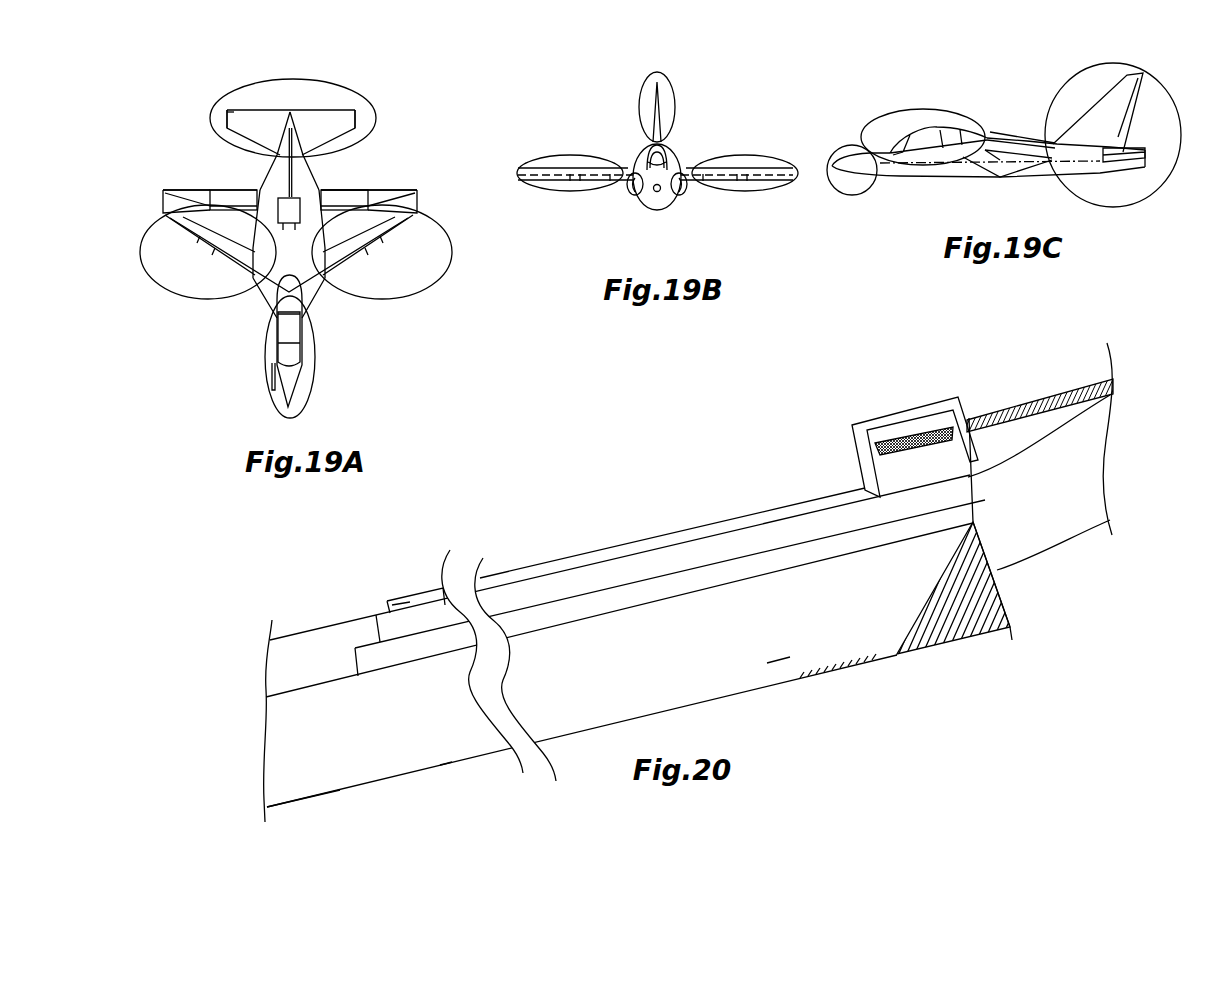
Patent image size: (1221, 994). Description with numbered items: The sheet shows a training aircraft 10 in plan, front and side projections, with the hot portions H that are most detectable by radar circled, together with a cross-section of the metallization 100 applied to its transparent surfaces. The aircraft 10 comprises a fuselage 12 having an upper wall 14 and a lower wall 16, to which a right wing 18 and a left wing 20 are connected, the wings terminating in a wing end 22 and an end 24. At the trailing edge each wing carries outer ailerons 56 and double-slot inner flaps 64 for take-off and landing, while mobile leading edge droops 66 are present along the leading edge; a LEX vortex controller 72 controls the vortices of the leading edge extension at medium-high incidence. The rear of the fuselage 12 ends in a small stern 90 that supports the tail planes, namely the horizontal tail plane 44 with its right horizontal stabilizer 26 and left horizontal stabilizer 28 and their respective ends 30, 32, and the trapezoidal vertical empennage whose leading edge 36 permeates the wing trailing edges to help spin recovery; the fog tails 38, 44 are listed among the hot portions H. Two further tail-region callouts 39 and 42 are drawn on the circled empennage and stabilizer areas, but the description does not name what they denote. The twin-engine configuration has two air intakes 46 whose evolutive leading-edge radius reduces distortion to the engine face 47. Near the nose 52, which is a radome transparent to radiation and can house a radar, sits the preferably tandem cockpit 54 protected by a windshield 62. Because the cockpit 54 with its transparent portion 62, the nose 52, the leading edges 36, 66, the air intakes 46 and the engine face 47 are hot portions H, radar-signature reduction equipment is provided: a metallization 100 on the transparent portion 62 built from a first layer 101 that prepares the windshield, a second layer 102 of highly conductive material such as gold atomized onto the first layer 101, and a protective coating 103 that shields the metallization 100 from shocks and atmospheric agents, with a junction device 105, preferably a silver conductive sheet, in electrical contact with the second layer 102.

In FIG. 19A, the aircraft 10 is at (265, 343).
In FIG. 19B, the aircraft 10 is at (700, 122).
In FIG. 19C, the aircraft 10 is at (903, 117).
In FIG. 19A, the fuselage 12 is at (323, 268).
In FIG. 19B, the fuselage 12 is at (682, 160).
In FIG. 19C, the fuselage 12 is at (943, 177).
In FIG. 19C, the upper wall 14 is at (1022, 130).
In FIG. 19B, the lower wall 16 is at (662, 193).
In FIG. 19A, the right wing 18 is at (185, 217).
In FIG. 19A, the left wing 20 is at (373, 232).
In FIG. 19C, the left wing 20 is at (1000, 157).
In FIG. 19A, the wing end 22 is at (163, 192).
In FIG. 19A, the wing end 24 is at (418, 195).
In FIG. 19A, the right horizontal stabilizer 26 is at (255, 115).
In FIG. 19A, the left horizontal stabilizer 28 is at (320, 118).
In FIG. 19A, the end of right horizontal stabilizer 30 is at (223, 118).
In FIG. 19A, the end of left horizontal stabilizer 32 is at (368, 127).
In FIG. 19C, the leading edge of vertical empennage 36 is at (1073, 120).
In FIG. 19A, the fog tail 38 is at (288, 184).
In FIG. 19C, the rudder 39 is at (1117, 92).
In FIG. 19A, the canard assembly 42 is at (355, 112).
In FIG. 19C, the horizontal tail plane 44 is at (1130, 152).
In FIG. 19B, the air intake 46 is at (628, 190).
In FIG. 19A, the engine face 47 is at (230, 110).
In FIG. 19A, the nose 52 is at (287, 403).
In FIG. 19B, the nose 52 is at (652, 193).
In FIG. 19C, the nose 52 is at (840, 170).
In FIG. 19C, the cockpit 54 is at (927, 137).
In FIG. 19A, the outer aileron 56 is at (180, 190).
In FIG. 19A, the windshield 62 is at (303, 150).
In FIG. 19C, the windshield 62 is at (888, 137).
In FIG. 20, the windshield 62 is at (452, 772).
In FIG. 19A, the inner flap 64 is at (230, 193).
In FIG. 19A, the mobile leading edge 66 is at (205, 233).
In FIG. 19C, the LEX vortex controller 72 is at (988, 140).
In FIG. 19A, the small stern 90 is at (290, 112).
In FIG. 20, the metallization 100 is at (278, 660).
In FIG. 20, the first layer 101 is at (853, 539).
In FIG. 20, the second layer 102 is at (684, 556).
In FIG. 20, the protective coating 103 is at (610, 546).
In FIG. 20, the junction device 105 is at (1025, 404).
In FIG. 20, the hot portion H is at (332, 758).